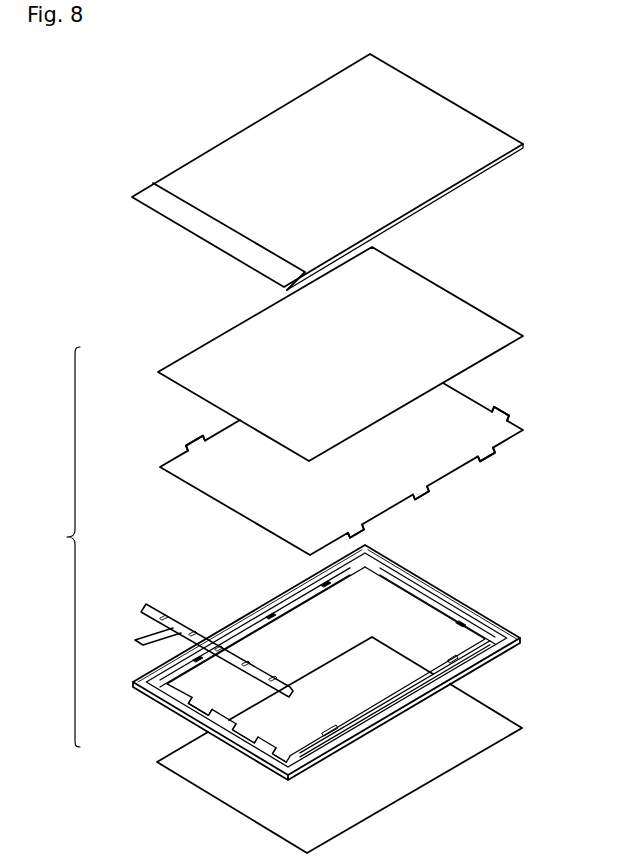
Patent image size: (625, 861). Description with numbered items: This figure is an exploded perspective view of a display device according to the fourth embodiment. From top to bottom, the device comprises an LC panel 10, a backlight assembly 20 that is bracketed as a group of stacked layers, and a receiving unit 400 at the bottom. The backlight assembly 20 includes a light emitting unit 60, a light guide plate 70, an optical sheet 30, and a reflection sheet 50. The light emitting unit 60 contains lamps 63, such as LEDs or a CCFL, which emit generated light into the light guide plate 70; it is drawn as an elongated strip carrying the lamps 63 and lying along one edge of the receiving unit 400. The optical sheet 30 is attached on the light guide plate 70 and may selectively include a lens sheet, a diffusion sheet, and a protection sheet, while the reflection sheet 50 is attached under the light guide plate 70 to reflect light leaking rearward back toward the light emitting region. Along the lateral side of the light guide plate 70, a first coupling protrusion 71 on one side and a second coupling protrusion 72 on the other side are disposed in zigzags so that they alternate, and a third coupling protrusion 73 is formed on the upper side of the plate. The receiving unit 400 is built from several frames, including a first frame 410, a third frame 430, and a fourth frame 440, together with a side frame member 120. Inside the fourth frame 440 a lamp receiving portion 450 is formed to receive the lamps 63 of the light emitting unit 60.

The LC panel 10 is at (143, 190).
The backlight assembly 20 is at (58, 547).
The optical sheet 30 is at (165, 372).
The reflection sheet 50 is at (168, 761).
The light emitting unit 60 is at (152, 604).
The lamps 63 is at (195, 627).
The light guide plate 70 is at (162, 465).
The first coupling protrusion 71 is at (424, 497).
The second coupling protrusion 72 is at (190, 440).
The third coupling protrusion 73 is at (502, 409).
The side frame member 120 is at (418, 576).
The receiving unit 400 is at (327, 648).
The first frame 410 is at (258, 607).
The third frame 430 is at (487, 661).
The fourth frame 440 is at (150, 697).
The lamp receiving portion 450 is at (201, 708).